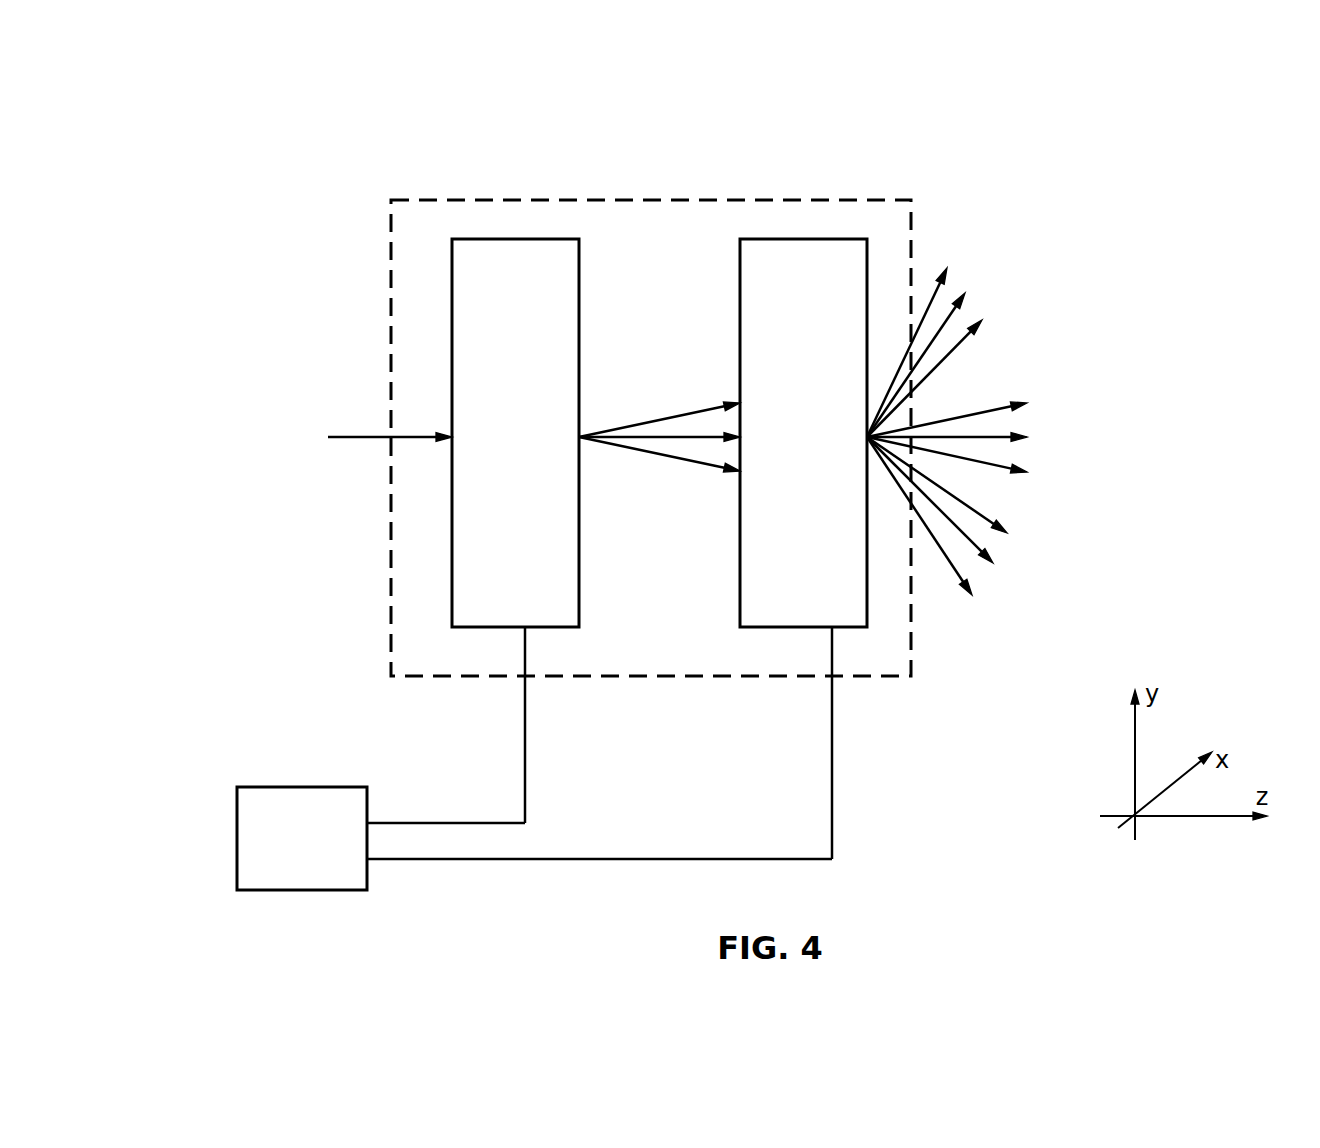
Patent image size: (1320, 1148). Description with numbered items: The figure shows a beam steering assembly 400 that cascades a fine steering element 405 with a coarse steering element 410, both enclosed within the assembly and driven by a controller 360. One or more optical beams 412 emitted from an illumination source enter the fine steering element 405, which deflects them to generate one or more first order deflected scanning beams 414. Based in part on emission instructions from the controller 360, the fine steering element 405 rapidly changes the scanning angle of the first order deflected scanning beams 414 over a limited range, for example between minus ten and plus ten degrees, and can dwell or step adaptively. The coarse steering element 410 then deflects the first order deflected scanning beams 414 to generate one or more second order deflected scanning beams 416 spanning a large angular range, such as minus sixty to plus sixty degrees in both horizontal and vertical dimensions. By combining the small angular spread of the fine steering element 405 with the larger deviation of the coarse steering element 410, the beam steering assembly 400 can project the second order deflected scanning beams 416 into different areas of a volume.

The beam steering assembly 400 is at (421, 192).
The fine steering element 405 is at (480, 628).
The coarse steering element 410 is at (777, 628).
The controller 360 is at (273, 787).
The optical beams 412 is at (348, 437).
The first order deflected scanning beams 414 is at (678, 415).
The second order deflected scanning beams 416 is at (991, 312).